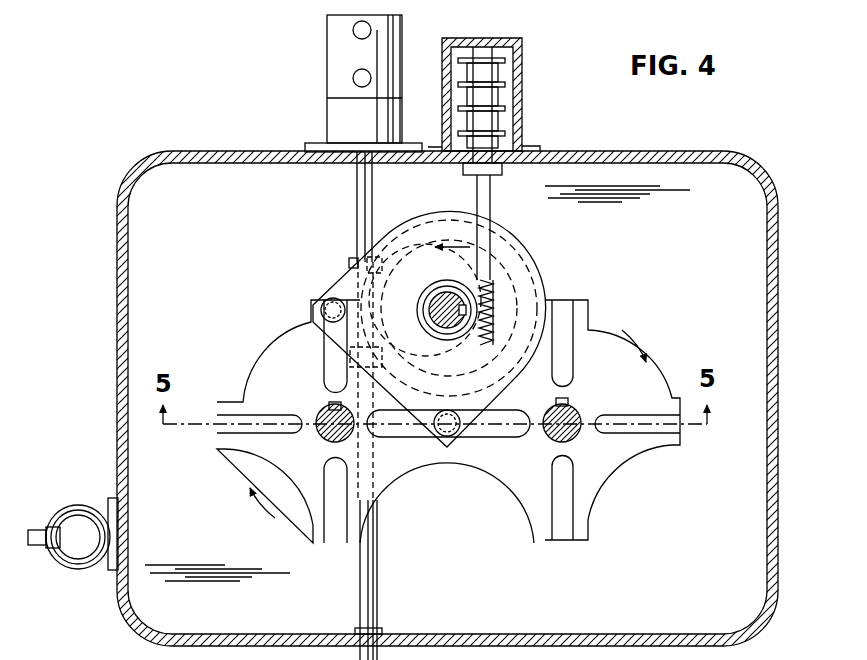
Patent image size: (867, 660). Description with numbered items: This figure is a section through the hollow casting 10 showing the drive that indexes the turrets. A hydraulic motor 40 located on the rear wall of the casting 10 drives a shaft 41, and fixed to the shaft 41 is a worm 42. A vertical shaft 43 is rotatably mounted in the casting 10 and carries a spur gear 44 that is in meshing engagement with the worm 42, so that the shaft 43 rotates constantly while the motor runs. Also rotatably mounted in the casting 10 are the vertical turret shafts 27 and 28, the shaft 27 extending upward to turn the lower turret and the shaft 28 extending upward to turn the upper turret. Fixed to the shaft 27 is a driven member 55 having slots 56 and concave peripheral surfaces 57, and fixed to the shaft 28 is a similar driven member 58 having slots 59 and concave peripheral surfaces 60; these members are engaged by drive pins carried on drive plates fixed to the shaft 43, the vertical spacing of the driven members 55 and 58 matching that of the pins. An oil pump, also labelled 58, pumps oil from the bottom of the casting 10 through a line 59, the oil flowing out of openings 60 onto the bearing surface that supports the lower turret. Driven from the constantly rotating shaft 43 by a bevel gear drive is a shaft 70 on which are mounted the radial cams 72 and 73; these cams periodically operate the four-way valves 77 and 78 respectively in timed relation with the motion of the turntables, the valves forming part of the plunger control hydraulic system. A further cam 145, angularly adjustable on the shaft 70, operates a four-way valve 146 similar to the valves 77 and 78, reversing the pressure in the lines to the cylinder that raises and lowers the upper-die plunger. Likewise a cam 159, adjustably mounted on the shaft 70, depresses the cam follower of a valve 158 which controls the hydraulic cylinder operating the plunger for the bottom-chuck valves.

The hollow casting 10 is at (622, 151).
The hydraulic motor 40 is at (327, 38).
The shaft 41 is at (375, 210).
The worm 42 is at (365, 284).
The vertical shaft 43 is at (455, 295).
The spur gear 44 is at (538, 284).
The shaft 70 is at (492, 197).
The radial cam 72 is at (520, 50).
The four-way valve 77 is at (487, 56).
The four-way valve 78 is at (498, 75).
The radial cam 73 is at (500, 92).
The four-way valve 146 is at (500, 101).
The cam 145 is at (503, 114).
The valve 158 is at (503, 128).
The cam 159 is at (499, 141).
The vertical turret shaft 27 is at (575, 412).
The vertical turret shaft 28 is at (330, 441).
The driven member 55 is at (596, 488).
The slots 56 is at (570, 330).
The concave peripheral surfaces 57 is at (523, 490).
The driven member 58 is at (385, 465).
The slots 59 is at (323, 354).
The concave peripheral surfaces 60 is at (270, 386).